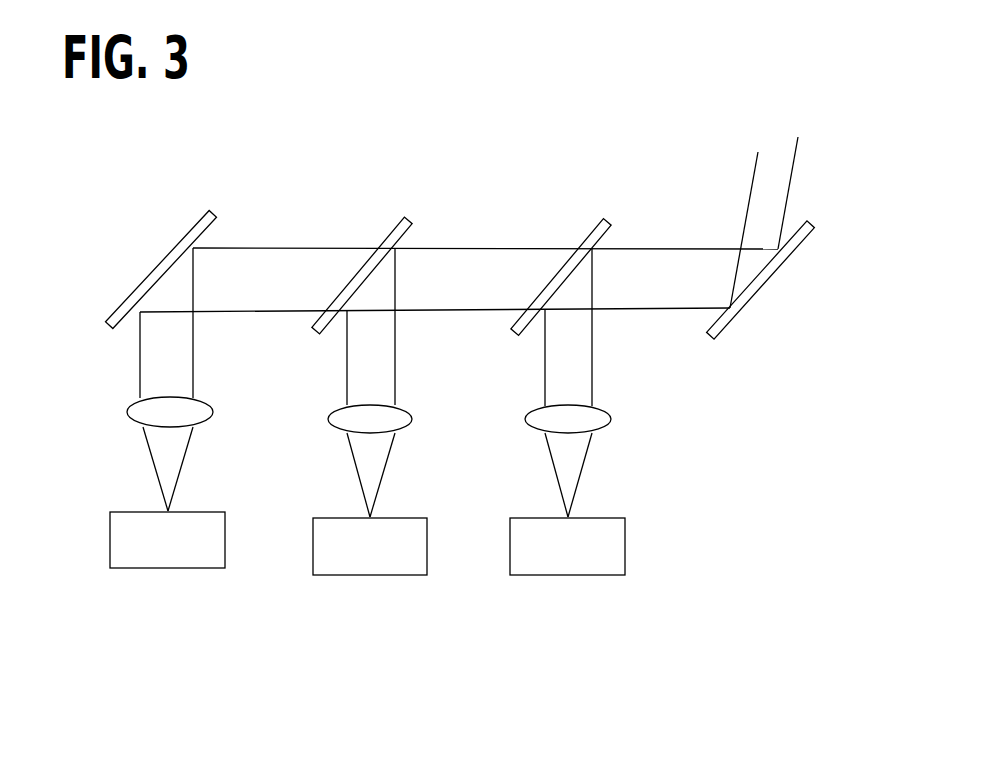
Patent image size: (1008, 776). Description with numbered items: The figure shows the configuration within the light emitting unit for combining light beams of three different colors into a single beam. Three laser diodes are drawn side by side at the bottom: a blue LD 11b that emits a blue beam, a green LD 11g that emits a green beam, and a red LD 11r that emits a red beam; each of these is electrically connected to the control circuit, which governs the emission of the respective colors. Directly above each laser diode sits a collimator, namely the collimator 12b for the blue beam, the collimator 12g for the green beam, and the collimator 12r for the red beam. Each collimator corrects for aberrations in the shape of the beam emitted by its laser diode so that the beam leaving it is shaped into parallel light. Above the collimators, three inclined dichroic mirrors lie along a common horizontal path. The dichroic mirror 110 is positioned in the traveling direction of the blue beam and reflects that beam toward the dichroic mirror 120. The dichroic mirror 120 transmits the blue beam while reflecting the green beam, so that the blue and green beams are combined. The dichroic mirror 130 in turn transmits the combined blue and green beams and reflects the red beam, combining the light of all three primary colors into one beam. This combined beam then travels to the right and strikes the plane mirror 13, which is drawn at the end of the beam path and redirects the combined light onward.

The dichroic mirror 110 is at (214, 211).
The dichroic mirror 120 is at (410, 216).
The dichroic mirror 130 is at (610, 219).
The plane mirror 13 is at (813, 222).
The collimator 12b is at (206, 405).
The collimator 12g is at (406, 411).
The collimator 12r is at (604, 411).
The blue LD 11b is at (225, 535).
The green LD 11g is at (427, 540).
The red LD 11r is at (625, 540).